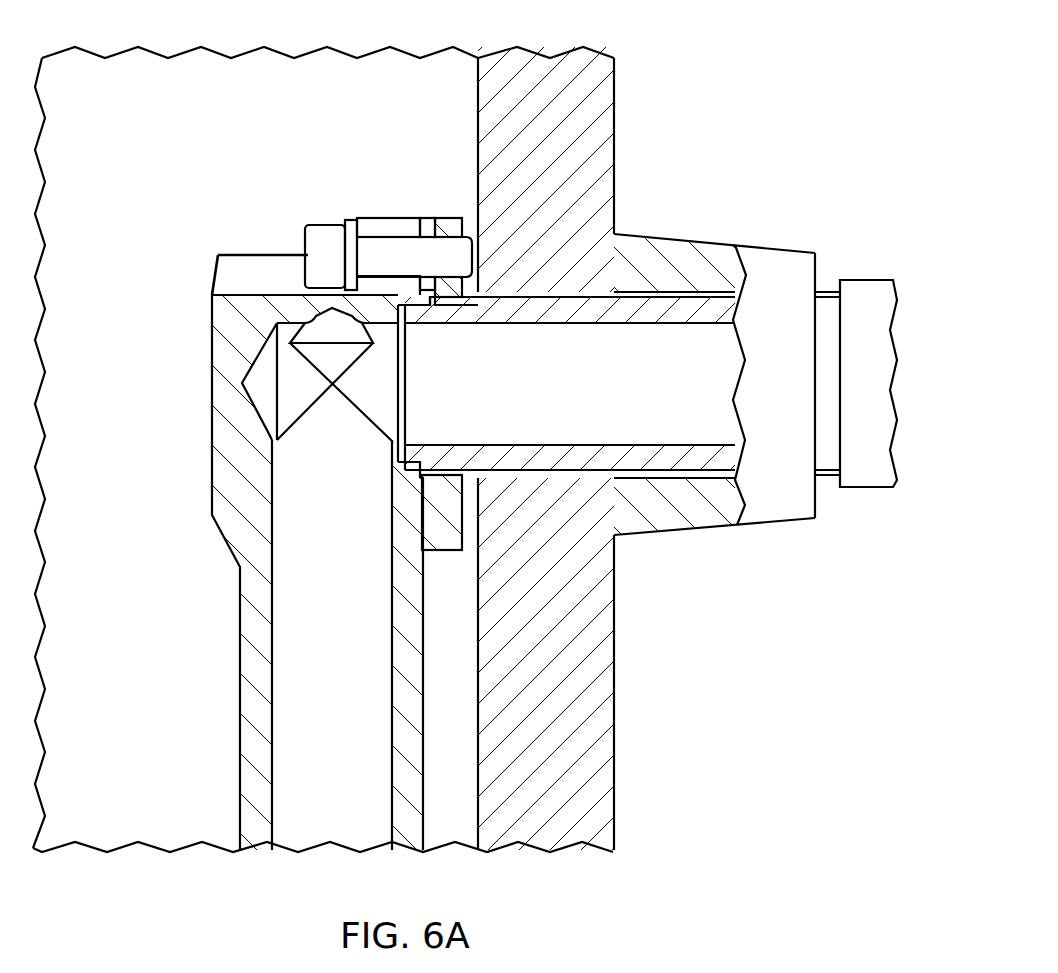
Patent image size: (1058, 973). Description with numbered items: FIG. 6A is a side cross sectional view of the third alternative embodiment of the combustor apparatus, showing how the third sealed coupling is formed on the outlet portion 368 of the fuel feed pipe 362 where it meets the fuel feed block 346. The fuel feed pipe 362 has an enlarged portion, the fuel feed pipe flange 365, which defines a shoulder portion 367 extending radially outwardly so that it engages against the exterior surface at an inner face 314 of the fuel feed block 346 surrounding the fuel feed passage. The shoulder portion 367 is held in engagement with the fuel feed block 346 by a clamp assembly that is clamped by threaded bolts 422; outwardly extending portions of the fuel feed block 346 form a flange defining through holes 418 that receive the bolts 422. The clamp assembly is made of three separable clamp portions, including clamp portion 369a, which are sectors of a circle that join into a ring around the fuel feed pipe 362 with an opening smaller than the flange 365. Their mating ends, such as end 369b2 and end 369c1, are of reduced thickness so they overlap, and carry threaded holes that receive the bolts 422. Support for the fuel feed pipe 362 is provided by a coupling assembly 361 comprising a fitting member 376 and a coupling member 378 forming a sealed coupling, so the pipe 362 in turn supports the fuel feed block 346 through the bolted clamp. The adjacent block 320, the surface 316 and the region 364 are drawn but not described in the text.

The support block 320 is at (530, 58).
The fuel feed block 346 is at (188, 425).
The mounting plate surface 316 is at (353, 287).
The threaded bolts 422 is at (320, 228).
The through holes 418 is at (397, 275).
The end of clamp portion 369b 369b2 is at (430, 217).
The end of clamp portion 369c 369c1 is at (455, 217).
The coupling assembly 361 is at (655, 190).
The inner face 314 is at (423, 300).
The outlet portion 368 is at (573, 455).
The tube outer surface 364 is at (503, 468).
The fuel feed pipe 362 is at (675, 478).
The coupling member 378 is at (755, 527).
The fitting member 376 is at (866, 500).
The shoulder portion 367 is at (418, 478).
The fuel feed pipe flange 365 is at (421, 480).
The clamp portion 369a is at (440, 555).